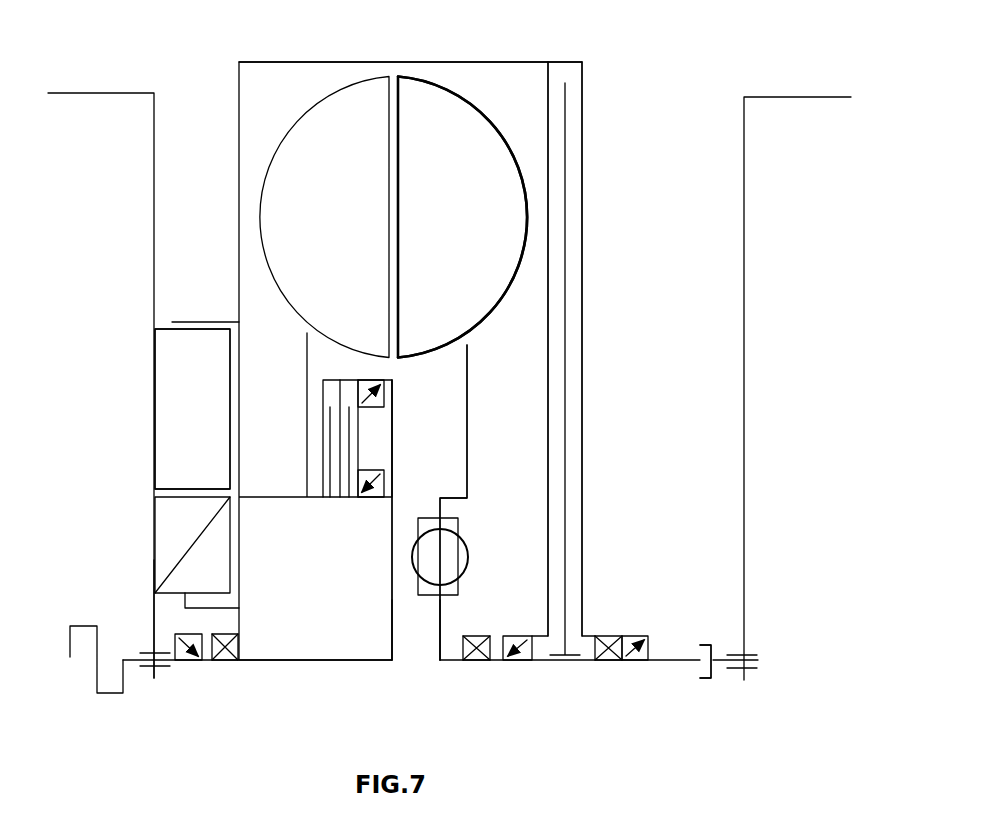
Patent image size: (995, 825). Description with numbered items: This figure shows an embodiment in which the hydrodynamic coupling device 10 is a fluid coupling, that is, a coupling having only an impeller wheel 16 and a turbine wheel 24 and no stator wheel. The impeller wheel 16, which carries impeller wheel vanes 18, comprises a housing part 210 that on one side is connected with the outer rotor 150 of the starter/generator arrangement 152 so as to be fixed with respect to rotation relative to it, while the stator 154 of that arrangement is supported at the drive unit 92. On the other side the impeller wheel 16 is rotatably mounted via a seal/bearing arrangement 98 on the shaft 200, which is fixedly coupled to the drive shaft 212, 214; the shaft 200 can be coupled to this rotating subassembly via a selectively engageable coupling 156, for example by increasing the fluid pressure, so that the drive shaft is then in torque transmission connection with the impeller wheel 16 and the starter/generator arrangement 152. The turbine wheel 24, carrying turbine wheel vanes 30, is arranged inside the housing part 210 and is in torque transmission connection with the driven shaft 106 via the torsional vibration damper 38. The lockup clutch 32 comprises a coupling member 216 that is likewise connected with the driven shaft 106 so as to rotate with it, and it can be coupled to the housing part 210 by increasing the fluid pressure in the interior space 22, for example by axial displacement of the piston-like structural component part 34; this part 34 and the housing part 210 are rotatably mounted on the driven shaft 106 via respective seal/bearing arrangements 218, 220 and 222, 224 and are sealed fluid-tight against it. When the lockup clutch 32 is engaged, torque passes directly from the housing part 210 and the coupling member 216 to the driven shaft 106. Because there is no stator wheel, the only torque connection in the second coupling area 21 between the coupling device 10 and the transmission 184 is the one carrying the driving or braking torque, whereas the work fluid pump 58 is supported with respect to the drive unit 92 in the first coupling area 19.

The hydrodynamic coupling device 10 is at (463, 47).
The impeller wheel 16 is at (320, 70).
The impeller wheel vanes 18 is at (324, 217).
The first coupling area 19 is at (138, 599).
The second coupling area 21 is at (722, 683).
The interior space 22 is at (429, 502).
The turbine wheel 24 is at (498, 107).
The turbine wheel vanes 30 is at (462, 217).
The lockup clutch 32 is at (607, 333).
The piston-like structural component part 34 is at (548, 453).
The torsional vibration damper 38 is at (415, 613).
The work fluid pump 58 is at (153, 525).
The drive unit 92 is at (126, 93).
The seal/bearing arrangement 98 is at (112, 693).
The driven shaft 106 is at (672, 661).
The outer rotor 150 is at (190, 322).
The starter/generator arrangement 152 is at (137, 450).
The stator 154 is at (165, 367).
The coupling 156 is at (343, 498).
The transmission 184 is at (808, 97).
The shaft 200 is at (312, 660).
The housing part 210 is at (262, 62).
The drive shaft 212 is at (188, 660).
The drive shaft 214 is at (227, 660).
The coupling member 216 is at (565, 232).
The seal/bearing arrangement 218 is at (520, 661).
The seal/bearing arrangement 220 is at (482, 661).
The seal/bearing arrangement 222 is at (640, 661).
The seal/bearing arrangement 224 is at (608, 661).